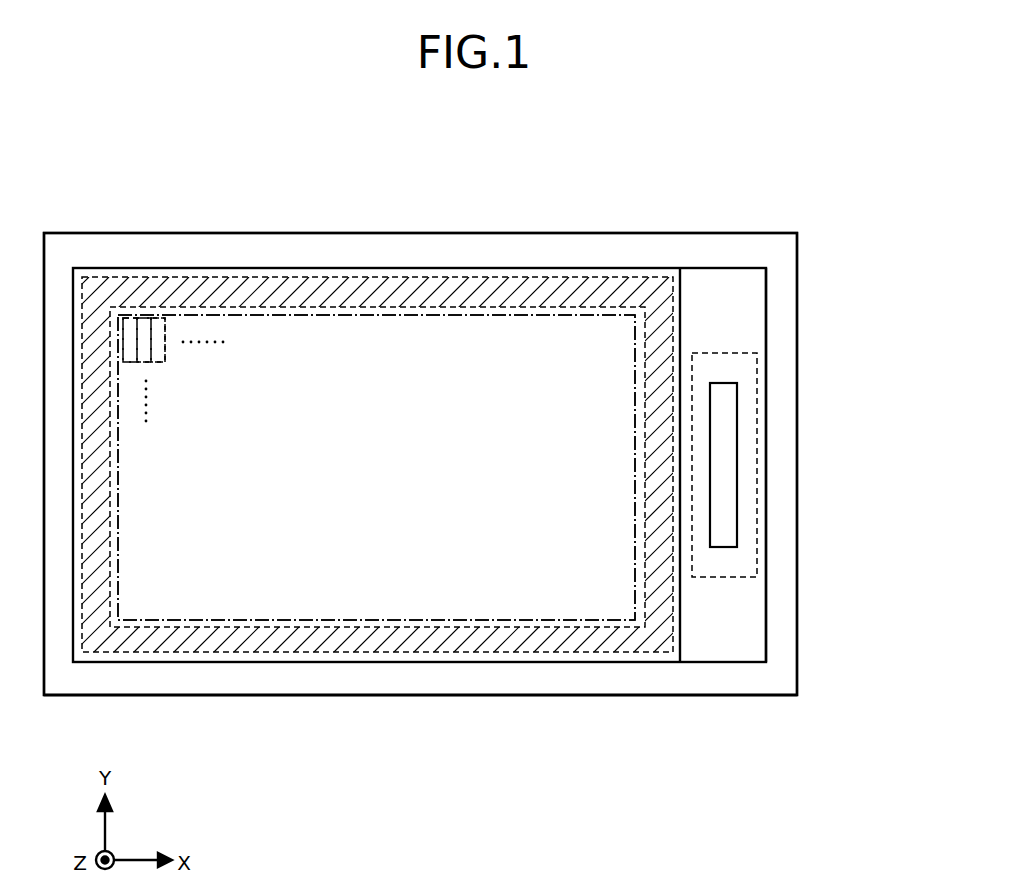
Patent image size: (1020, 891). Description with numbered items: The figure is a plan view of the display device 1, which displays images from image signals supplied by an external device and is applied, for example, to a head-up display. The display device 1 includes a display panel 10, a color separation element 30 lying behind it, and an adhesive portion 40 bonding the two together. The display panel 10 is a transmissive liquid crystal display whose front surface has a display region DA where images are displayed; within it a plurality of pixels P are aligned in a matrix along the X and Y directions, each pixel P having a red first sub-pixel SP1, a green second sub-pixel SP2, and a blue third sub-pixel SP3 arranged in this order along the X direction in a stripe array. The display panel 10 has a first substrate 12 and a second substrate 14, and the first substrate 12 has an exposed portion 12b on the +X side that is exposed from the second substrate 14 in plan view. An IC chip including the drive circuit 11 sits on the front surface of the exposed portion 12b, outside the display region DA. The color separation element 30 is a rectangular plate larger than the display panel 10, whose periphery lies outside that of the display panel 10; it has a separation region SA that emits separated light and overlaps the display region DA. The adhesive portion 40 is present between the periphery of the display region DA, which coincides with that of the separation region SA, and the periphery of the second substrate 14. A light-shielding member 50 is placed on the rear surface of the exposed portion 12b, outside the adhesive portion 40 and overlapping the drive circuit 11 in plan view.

The display device 1 is at (624, 134).
The display panel 10 is at (613, 248).
The drive circuit 11 is at (737, 462).
The first substrate 12 is at (778, 282).
The exposed portion 12b is at (768, 328).
The second substrate 14 is at (680, 302).
The color separation element 30 is at (333, 695).
The adhesive portion 40 is at (252, 652).
The light-shielding member 50 is at (727, 577).
The pixel P is at (65, 164).
The first sub-pixel SP1 is at (131, 321).
The second sub-pixel SP2 is at (143, 322).
The third sub-pixel SP3 is at (156, 321).
The display region DA is at (363, 317).
The separation region SA is at (376, 467).